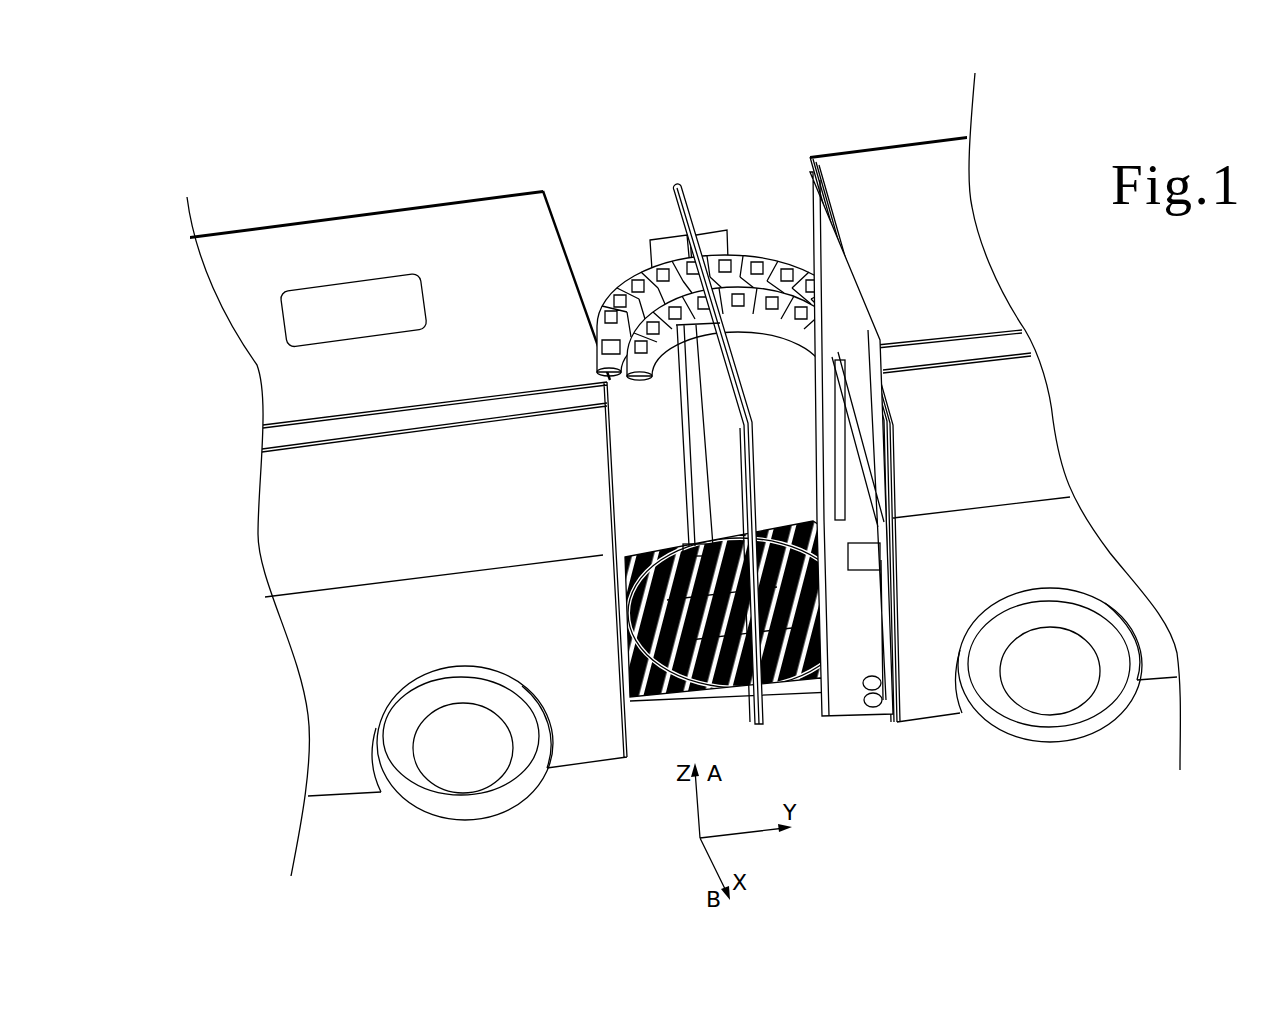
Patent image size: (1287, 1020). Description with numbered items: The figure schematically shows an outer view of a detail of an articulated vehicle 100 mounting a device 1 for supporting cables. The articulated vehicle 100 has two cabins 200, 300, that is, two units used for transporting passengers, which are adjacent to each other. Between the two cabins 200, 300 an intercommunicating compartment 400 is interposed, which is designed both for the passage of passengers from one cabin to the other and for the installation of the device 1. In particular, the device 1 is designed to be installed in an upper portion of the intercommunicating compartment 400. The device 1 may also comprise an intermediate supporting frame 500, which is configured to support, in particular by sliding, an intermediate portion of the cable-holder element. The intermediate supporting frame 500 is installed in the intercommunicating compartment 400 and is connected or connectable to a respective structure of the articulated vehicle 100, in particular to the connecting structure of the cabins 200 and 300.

The device for supporting cables 1 is at (728, 398).
The articulated vehicle 100 is at (628, 383).
The cabin 200 is at (266, 198).
The cabin 300 is at (879, 128).
The intercommunicating compartment 400 is at (743, 183).
The intermediate supporting frame 500 is at (680, 185).